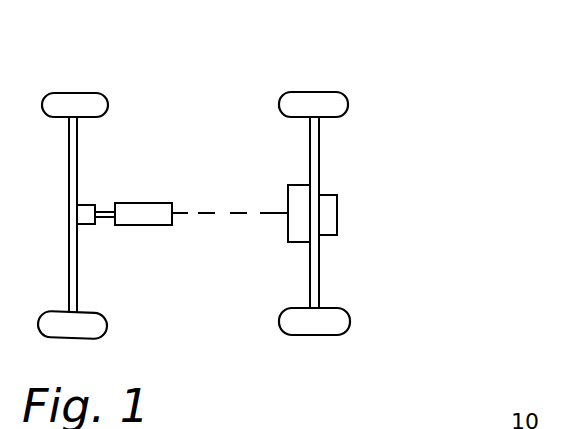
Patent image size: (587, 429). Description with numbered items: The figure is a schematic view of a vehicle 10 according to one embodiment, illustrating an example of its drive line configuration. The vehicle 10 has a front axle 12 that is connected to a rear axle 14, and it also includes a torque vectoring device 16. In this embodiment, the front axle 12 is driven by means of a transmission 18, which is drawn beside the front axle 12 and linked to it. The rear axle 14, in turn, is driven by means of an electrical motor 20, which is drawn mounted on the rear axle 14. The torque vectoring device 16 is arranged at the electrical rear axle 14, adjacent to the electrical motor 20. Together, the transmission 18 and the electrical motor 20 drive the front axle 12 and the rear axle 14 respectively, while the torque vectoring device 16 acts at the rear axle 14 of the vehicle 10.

The vehicle 10 is at (408, 81).
The front axle 12 is at (78, 270).
The rear axle 14 is at (319, 166).
The torque vectoring device 16 is at (337, 230).
The transmission 18 is at (125, 203).
The electrical motor 20 is at (288, 229).